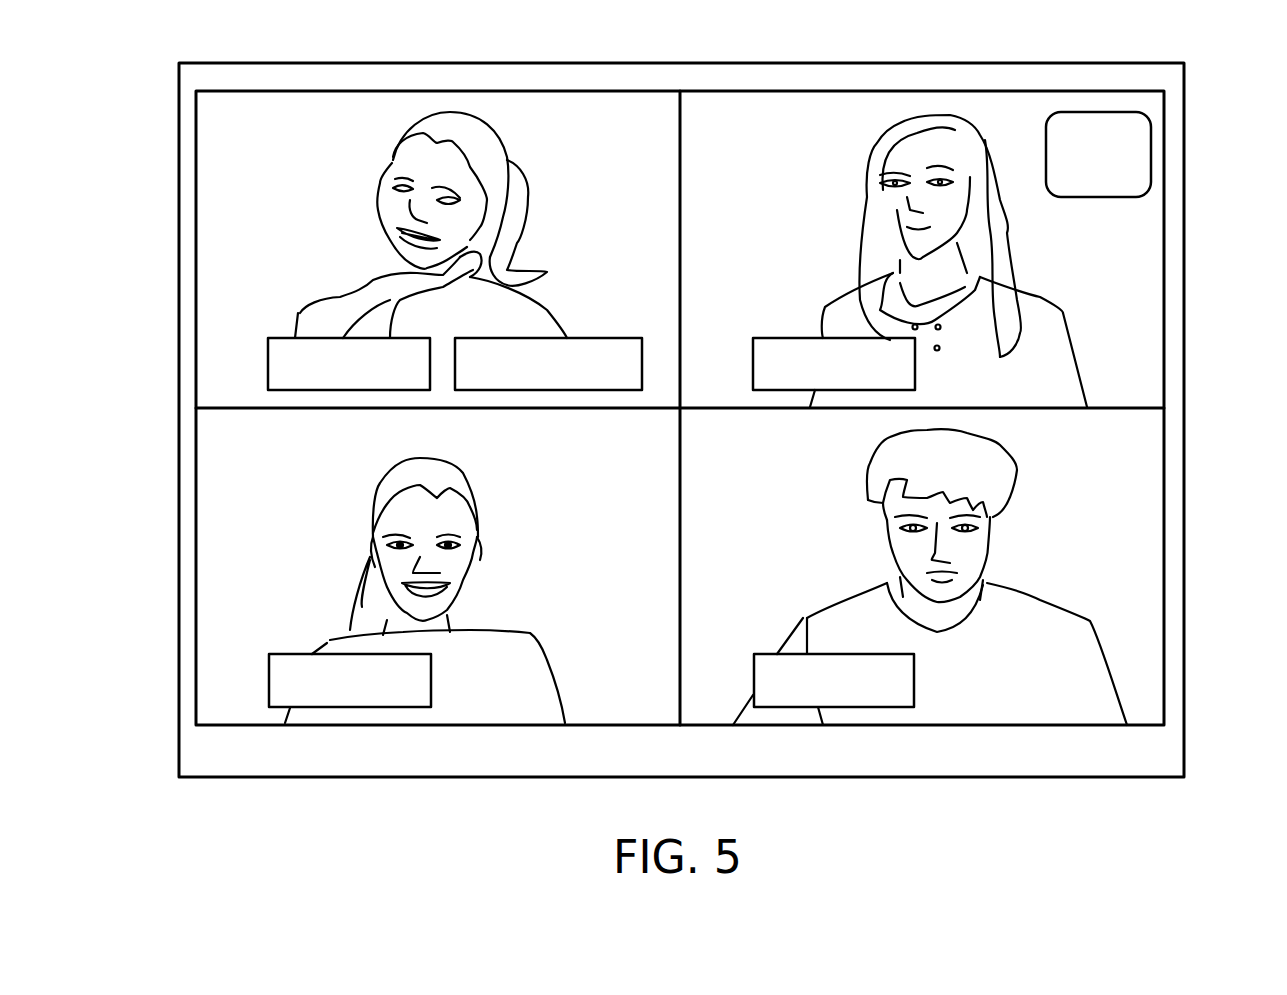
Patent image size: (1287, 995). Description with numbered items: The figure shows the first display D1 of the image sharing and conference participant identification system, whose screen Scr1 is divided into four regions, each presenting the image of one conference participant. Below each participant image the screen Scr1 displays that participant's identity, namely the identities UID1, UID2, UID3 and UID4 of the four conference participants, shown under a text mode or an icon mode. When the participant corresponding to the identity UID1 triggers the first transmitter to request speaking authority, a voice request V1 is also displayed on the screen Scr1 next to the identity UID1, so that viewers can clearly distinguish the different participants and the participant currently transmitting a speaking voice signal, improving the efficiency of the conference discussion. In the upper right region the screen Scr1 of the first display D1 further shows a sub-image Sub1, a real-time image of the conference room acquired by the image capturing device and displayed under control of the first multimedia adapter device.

The first display D1 is at (200, 62).
The screen Scr1 is at (195, 167).
The identity UID1 is at (315, 338).
The identity UID2 is at (332, 654).
The identity UID3 is at (800, 338).
The identity UID4 is at (838, 654).
The voice request V1 is at (608, 338).
The sub-image Sub1 is at (1151, 152).